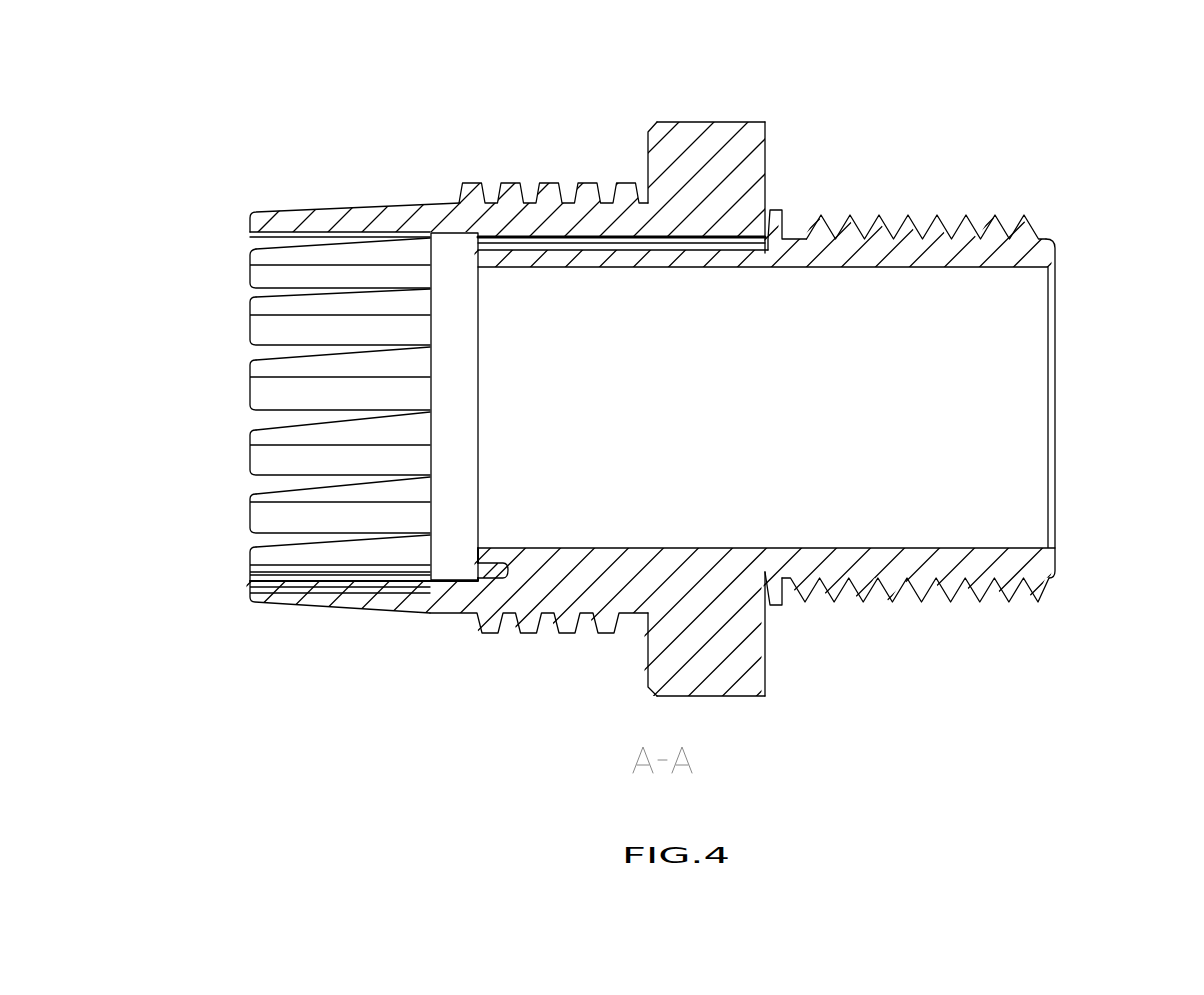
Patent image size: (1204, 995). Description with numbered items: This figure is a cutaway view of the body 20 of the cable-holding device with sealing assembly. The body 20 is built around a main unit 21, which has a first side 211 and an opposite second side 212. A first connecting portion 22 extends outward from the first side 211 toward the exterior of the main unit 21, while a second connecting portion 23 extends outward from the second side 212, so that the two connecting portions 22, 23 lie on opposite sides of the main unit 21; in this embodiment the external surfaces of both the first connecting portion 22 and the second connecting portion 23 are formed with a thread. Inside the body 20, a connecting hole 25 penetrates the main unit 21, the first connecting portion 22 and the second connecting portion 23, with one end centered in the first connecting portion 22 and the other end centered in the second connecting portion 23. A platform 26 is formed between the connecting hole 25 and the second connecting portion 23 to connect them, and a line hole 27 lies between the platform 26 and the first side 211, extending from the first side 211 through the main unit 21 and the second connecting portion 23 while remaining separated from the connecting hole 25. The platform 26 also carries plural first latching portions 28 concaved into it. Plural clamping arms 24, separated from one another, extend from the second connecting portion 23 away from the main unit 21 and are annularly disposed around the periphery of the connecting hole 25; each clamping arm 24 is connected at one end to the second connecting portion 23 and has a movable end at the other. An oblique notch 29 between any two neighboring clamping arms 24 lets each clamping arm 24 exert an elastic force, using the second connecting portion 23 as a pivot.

The body 20 is at (1118, 130).
The main unit 21 is at (708, 142).
The first side 211 is at (768, 177).
The second side 212 is at (647, 167).
The first connecting portion 22 is at (913, 565).
The second connecting portion 23 is at (554, 603).
The clamping arms 24 is at (262, 332).
The connecting hole 25 is at (1017, 380).
The platform 26 is at (467, 248).
The line hole 27 is at (562, 243).
The first latching portions 28 is at (485, 573).
The oblique notch 29 is at (260, 422).